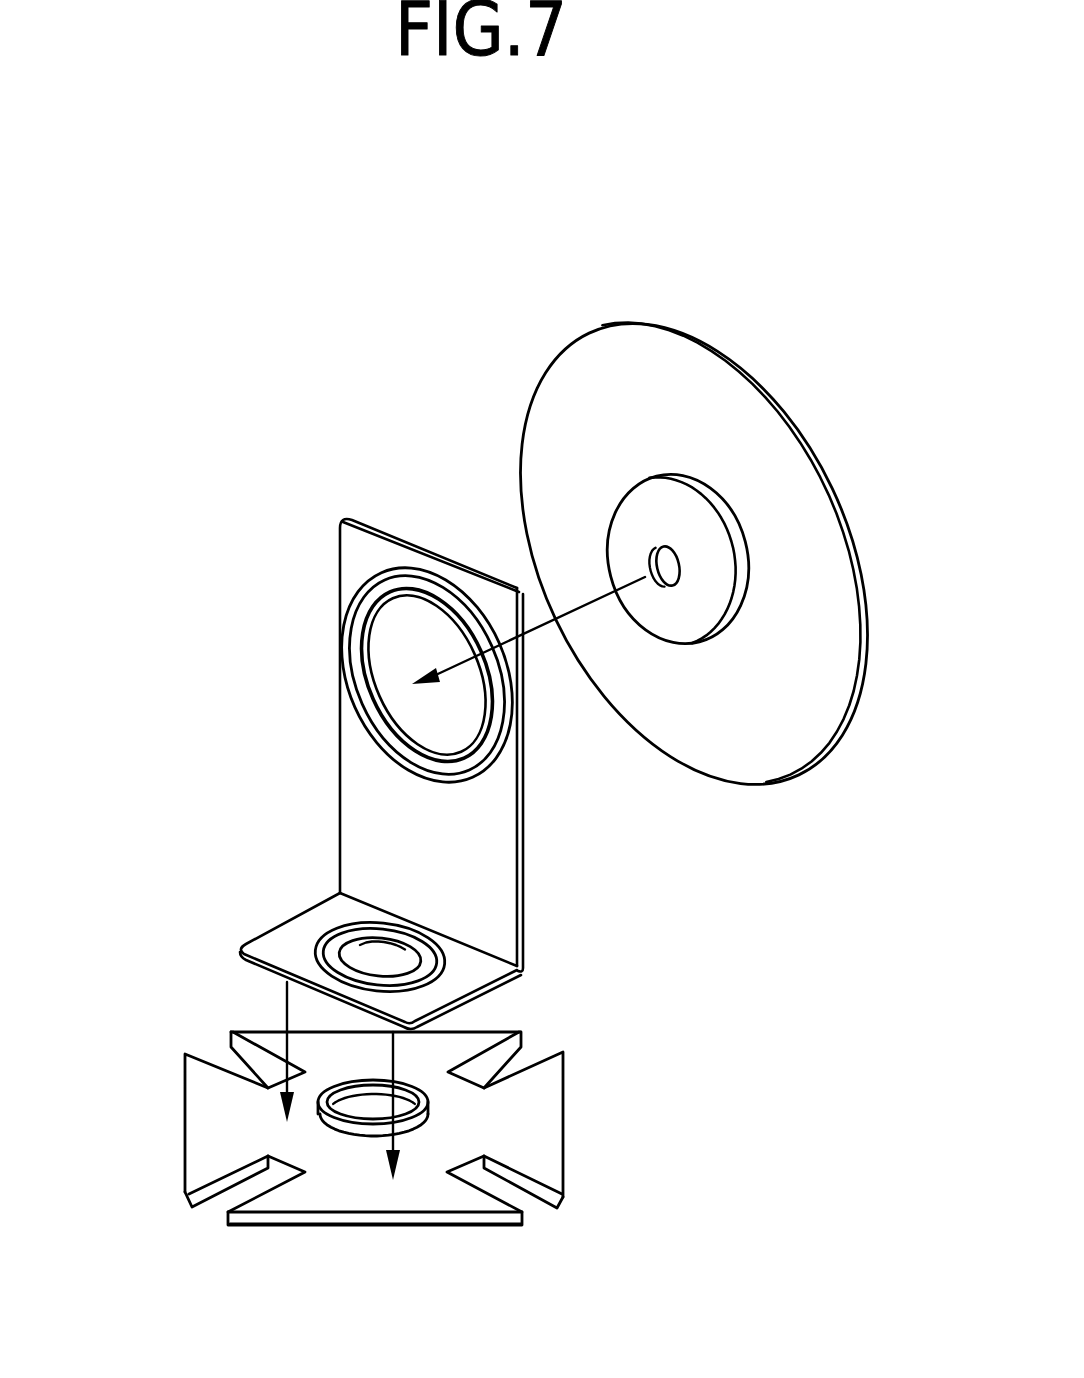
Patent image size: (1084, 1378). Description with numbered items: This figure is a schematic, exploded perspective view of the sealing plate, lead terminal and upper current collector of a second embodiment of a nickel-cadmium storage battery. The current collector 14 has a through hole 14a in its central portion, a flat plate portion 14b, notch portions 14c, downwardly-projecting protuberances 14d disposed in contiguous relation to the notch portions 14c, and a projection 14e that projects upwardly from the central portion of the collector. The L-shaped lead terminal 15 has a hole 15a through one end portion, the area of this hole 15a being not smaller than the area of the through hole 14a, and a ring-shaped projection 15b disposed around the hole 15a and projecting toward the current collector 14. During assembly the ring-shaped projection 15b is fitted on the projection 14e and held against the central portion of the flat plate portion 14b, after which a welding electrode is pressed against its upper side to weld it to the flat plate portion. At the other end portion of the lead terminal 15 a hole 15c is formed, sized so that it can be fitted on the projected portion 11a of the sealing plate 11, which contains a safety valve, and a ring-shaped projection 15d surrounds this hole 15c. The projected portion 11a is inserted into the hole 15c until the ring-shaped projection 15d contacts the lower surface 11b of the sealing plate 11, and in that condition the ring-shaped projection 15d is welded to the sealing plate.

The sealing plate 11 is at (680, 381).
The projected portion 11a is at (703, 560).
The lower surface 11b is at (754, 718).
The current collector 14 is at (523, 1087).
The through hole 14a is at (420, 1105).
The flat plate portion 14b is at (522, 1152).
The notch portions 14c is at (513, 1197).
The downwardly-projecting protuberances 14d is at (553, 1207).
The projection 14e is at (353, 1143).
The lead terminal 15 is at (478, 820).
The hole 15a is at (384, 953).
The ring-shaped projection 15b is at (331, 935).
The hole 15c is at (413, 652).
The ring-shaped projection 15d is at (400, 564).